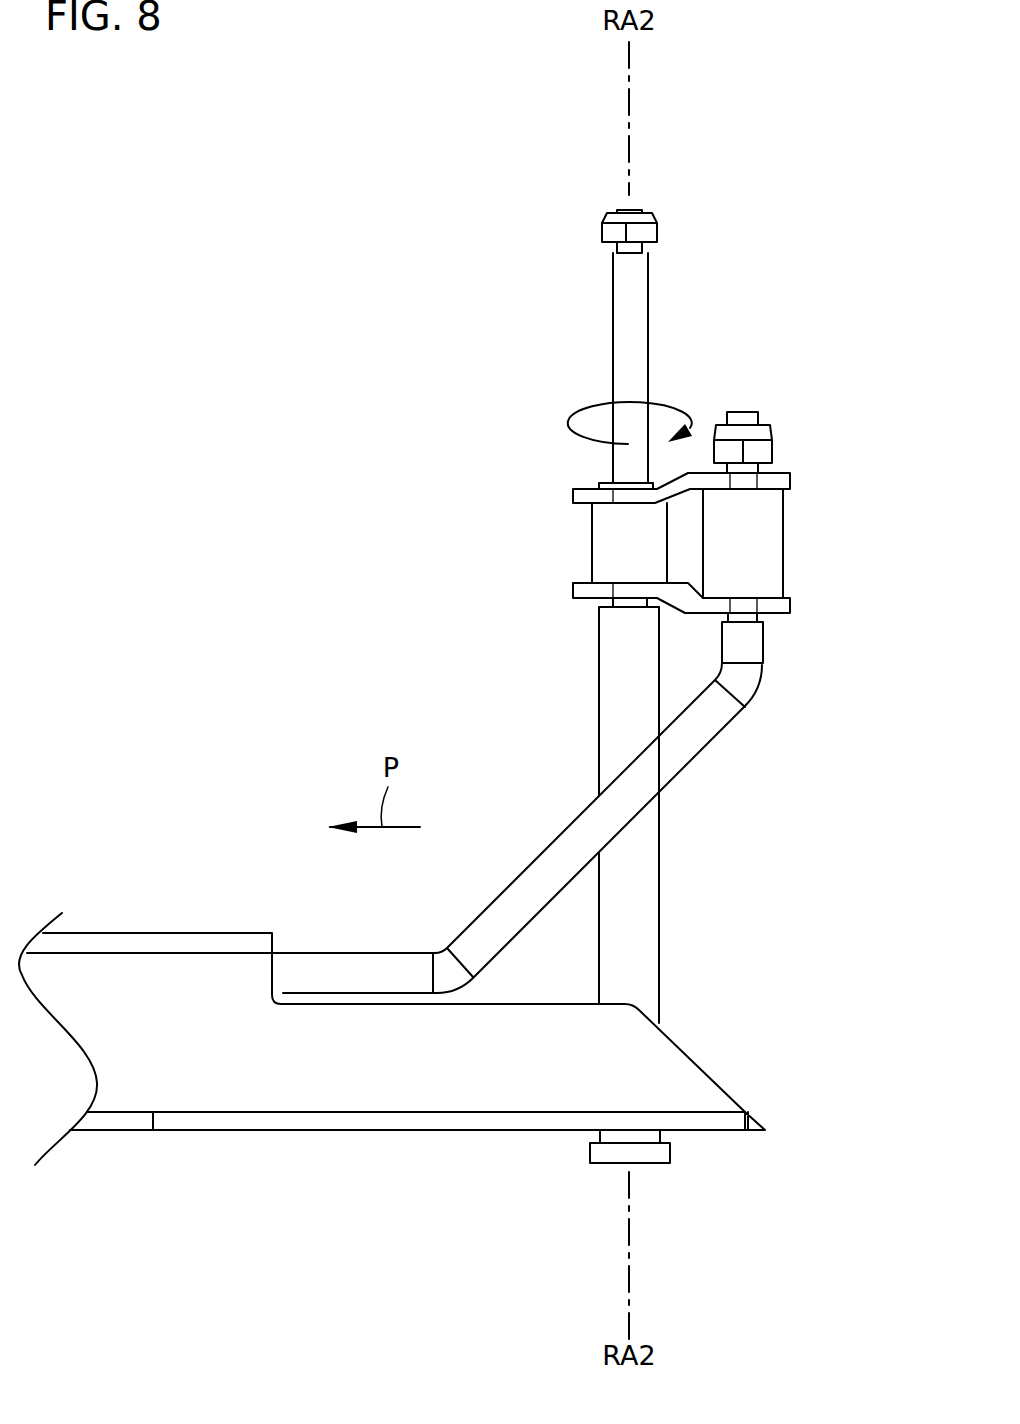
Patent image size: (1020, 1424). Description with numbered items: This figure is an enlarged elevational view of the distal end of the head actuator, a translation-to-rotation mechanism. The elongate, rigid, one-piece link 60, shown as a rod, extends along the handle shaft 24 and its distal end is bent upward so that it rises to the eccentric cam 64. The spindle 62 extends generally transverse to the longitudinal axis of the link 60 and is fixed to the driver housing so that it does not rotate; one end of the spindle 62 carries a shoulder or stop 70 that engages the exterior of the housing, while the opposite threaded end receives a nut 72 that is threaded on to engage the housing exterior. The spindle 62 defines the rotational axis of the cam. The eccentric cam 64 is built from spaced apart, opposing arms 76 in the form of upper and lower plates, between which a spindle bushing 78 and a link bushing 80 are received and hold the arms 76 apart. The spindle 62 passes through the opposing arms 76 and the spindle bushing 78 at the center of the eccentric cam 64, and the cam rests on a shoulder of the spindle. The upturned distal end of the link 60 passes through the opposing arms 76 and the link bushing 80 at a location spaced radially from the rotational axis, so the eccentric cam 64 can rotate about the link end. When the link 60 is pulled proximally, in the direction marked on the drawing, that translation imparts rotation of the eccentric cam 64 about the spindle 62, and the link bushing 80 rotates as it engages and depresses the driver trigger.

The handle shaft 24 is at (278, 1122).
The link 60 is at (517, 805).
The spindle 62 is at (617, 327).
The eccentric cam 64 is at (712, 537).
The stop 70 is at (657, 1157).
The nut 72 is at (656, 224).
The opposing arms 76 is at (783, 482).
The spindle bushing 78 is at (612, 543).
The link bushing 80 is at (757, 568).